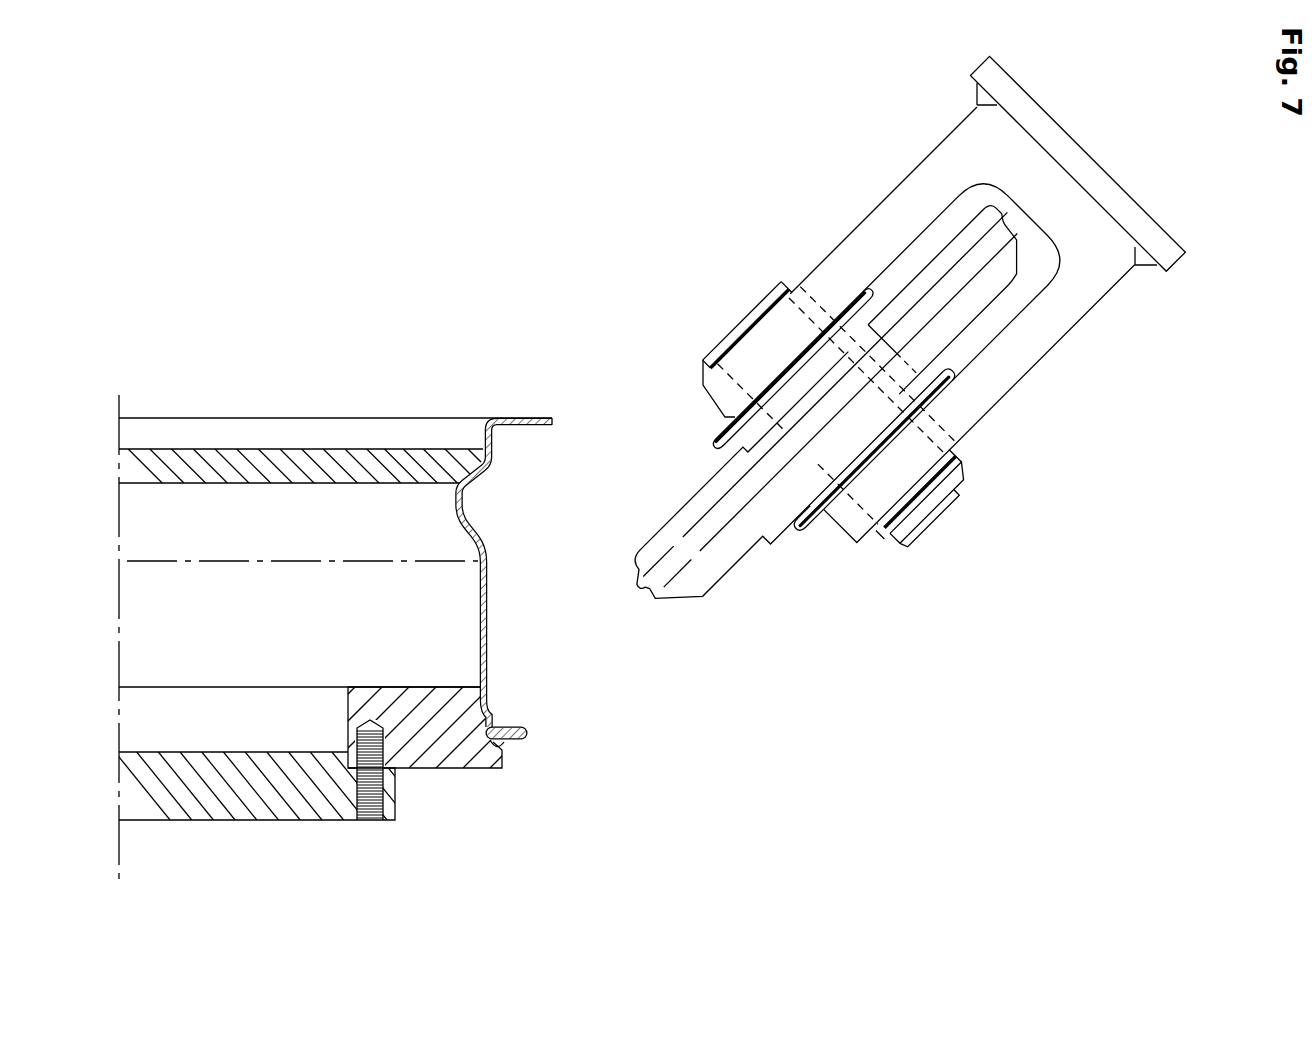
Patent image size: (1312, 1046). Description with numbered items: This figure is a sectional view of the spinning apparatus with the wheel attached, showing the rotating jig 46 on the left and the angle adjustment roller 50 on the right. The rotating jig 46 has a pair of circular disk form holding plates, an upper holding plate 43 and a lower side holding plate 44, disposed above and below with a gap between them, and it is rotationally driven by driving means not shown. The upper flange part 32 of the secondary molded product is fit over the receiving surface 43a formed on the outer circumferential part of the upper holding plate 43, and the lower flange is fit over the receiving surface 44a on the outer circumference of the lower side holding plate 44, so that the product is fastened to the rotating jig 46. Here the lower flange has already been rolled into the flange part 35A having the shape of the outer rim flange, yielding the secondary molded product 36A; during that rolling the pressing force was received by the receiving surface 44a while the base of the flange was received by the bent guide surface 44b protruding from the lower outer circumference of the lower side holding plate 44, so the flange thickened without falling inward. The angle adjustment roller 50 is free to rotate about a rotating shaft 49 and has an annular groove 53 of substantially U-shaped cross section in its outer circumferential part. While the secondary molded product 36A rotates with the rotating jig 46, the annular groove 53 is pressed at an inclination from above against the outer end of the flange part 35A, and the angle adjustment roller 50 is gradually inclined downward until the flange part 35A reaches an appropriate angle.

The upper flange part 32 is at (527, 425).
The flange part 35A is at (522, 735).
The secondary molded product 36A is at (532, 412).
The holding plate 43 is at (357, 451).
The receiving surface 43a is at (488, 457).
The lower side holding plate 44 is at (432, 765).
The receiving surface 44a is at (485, 710).
The bent guide surface 44b is at (505, 750).
The rotating jig 46 is at (283, 412).
The rotating shaft 49 is at (913, 538).
The angle adjustment roller 50 is at (683, 603).
The annular groove 53 is at (652, 592).